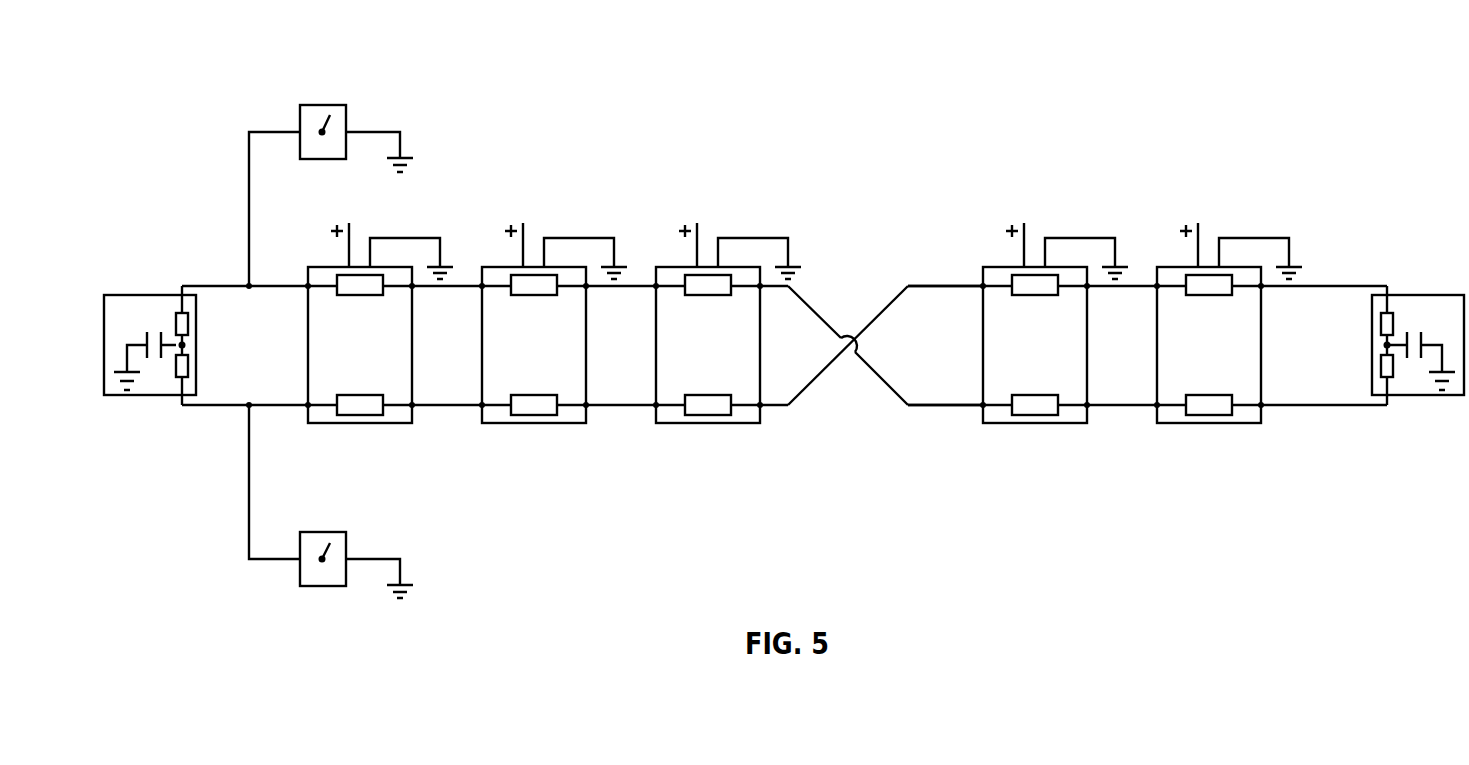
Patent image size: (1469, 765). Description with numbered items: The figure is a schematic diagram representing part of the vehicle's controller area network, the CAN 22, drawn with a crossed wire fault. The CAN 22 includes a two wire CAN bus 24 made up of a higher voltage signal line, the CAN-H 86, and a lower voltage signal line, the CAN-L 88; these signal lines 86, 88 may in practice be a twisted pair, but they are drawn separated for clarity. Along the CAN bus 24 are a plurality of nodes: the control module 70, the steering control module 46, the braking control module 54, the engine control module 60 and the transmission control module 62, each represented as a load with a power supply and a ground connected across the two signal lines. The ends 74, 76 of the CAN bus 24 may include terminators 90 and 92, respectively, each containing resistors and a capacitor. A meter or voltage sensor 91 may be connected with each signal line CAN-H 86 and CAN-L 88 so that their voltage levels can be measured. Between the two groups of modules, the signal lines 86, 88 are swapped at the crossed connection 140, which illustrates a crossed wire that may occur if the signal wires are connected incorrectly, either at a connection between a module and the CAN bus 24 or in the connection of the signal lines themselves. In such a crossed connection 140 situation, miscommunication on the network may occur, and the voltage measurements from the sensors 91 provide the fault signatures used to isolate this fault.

The CAN 22 is at (808, 131).
The CAN bus 24 is at (928, 287).
The steering control module 46 is at (535, 425).
The braking control module 54 is at (708, 425).
The engine control module 60 is at (1032, 425).
The transmission control module 62 is at (1208, 425).
The control module 70 is at (361, 425).
The end of the CAN bus 74 is at (182, 284).
The end of the CAN bus 76 is at (1387, 284).
The higher voltage signal line (CAN-H) 86 is at (1328, 286).
The lower voltage signal line (CAN-L) 88 is at (1331, 405).
The terminator 90 is at (148, 395).
The voltage sensor 91 is at (322, 105).
The terminator 92 is at (1418, 395).
The crossed connection 140 is at (843, 386).